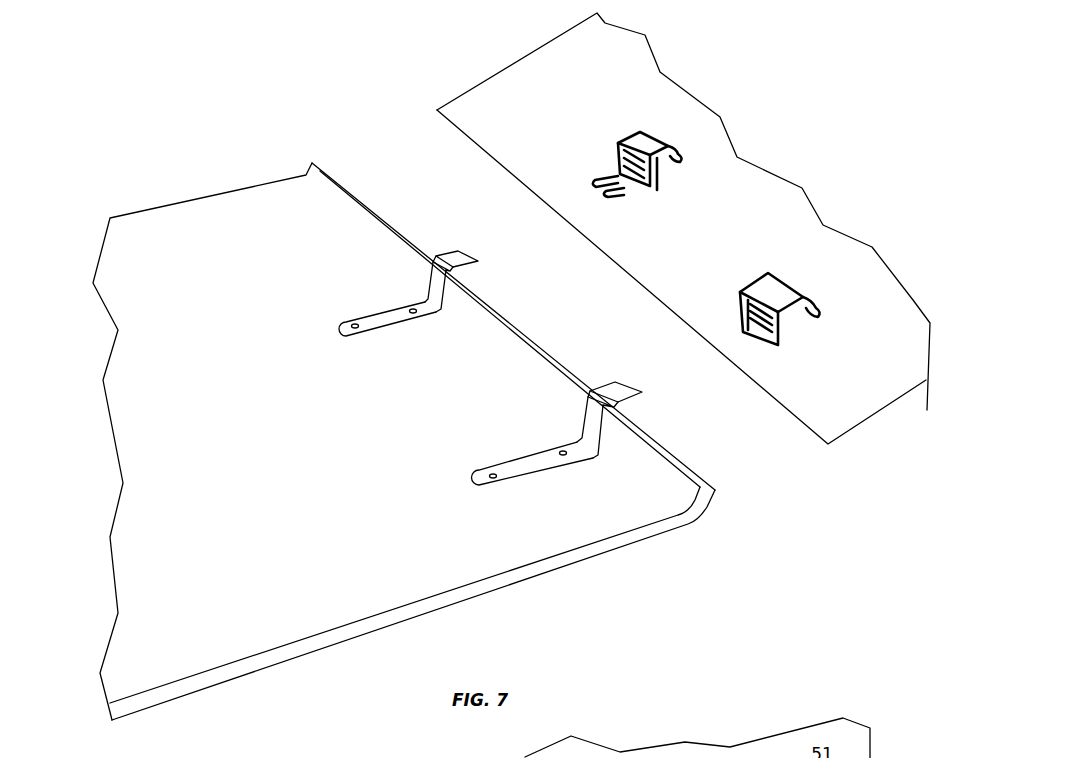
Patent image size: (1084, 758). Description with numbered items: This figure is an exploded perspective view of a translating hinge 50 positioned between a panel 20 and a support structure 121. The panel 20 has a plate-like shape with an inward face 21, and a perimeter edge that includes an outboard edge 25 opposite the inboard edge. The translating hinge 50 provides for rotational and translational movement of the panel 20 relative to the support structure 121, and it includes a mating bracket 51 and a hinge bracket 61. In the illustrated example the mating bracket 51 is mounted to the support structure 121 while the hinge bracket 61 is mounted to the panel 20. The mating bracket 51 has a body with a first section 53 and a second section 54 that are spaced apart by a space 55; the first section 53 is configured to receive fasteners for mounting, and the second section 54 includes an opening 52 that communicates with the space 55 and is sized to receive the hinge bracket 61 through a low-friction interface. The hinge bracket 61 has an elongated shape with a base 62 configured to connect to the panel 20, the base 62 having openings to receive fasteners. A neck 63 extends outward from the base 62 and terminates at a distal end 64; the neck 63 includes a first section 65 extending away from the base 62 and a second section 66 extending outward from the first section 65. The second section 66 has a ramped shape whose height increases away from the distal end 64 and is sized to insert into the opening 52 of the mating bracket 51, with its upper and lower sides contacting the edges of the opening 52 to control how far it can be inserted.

The panel 20 is at (383, 441).
The inward face 21 is at (277, 614).
The outboard edge 25 is at (522, 328).
The support structure 121 is at (516, 88).
The translating hinge 50 is at (596, 299).
The mating bracket 51 is at (637, 143).
The opening 52 is at (633, 185).
The first section 53 is at (668, 150).
The second section 54 is at (612, 158).
The space 55 is at (672, 172).
The hinge bracket 61 is at (499, 416).
The base 62 is at (373, 336).
The neck 63 is at (559, 306).
The distal end 64 is at (473, 258).
The first section 65 is at (432, 285).
The second section 66 is at (477, 266).